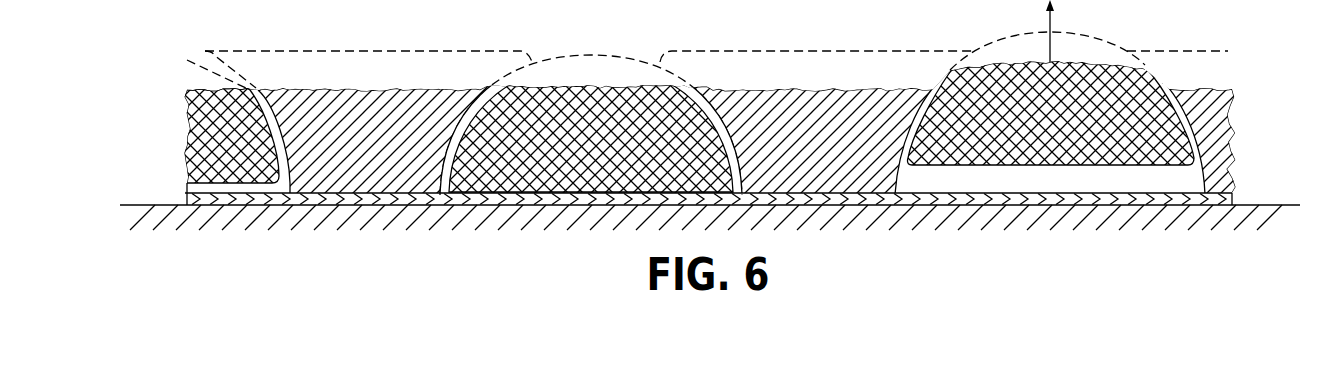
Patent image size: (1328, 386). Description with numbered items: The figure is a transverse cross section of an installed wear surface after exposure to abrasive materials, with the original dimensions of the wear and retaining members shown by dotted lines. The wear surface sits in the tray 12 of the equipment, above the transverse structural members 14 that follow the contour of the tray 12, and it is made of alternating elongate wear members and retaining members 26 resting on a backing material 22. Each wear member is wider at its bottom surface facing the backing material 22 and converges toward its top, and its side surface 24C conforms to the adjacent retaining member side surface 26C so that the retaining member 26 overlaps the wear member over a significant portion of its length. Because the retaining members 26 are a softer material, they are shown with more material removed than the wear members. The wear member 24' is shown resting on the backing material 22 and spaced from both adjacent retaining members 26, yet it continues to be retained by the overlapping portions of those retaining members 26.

The tray 12 is at (1266, 178).
The structural member 14 is at (152, 205).
The backing material 22 is at (1024, 192).
The wear member 24' is at (591, 104).
The wear member side surface 24C is at (941, 78).
The retaining member 26 is at (365, 95).
The retaining member side surface 26C is at (898, 178).